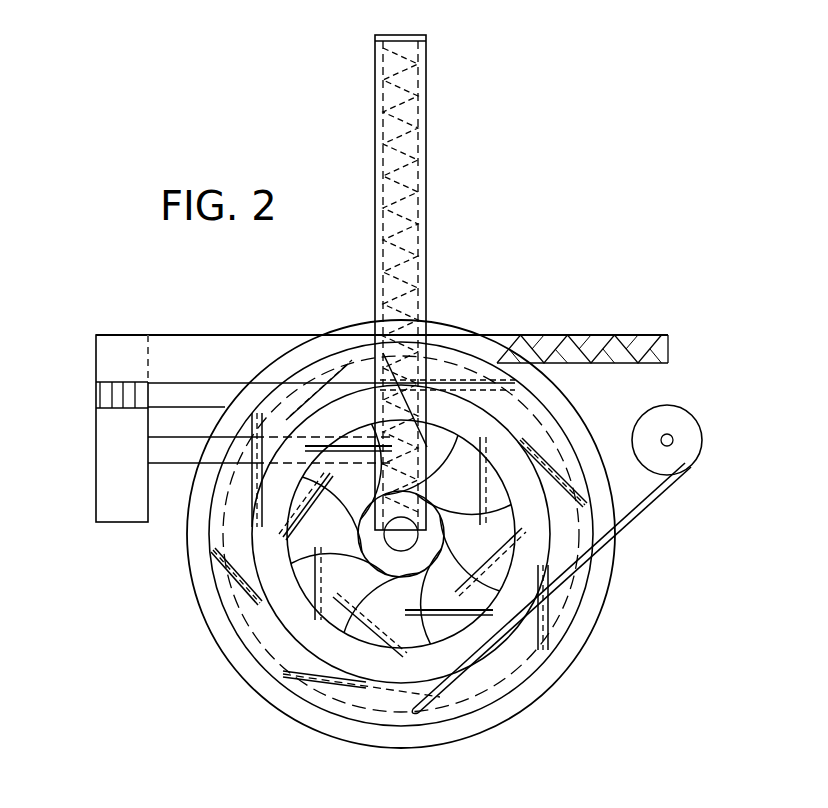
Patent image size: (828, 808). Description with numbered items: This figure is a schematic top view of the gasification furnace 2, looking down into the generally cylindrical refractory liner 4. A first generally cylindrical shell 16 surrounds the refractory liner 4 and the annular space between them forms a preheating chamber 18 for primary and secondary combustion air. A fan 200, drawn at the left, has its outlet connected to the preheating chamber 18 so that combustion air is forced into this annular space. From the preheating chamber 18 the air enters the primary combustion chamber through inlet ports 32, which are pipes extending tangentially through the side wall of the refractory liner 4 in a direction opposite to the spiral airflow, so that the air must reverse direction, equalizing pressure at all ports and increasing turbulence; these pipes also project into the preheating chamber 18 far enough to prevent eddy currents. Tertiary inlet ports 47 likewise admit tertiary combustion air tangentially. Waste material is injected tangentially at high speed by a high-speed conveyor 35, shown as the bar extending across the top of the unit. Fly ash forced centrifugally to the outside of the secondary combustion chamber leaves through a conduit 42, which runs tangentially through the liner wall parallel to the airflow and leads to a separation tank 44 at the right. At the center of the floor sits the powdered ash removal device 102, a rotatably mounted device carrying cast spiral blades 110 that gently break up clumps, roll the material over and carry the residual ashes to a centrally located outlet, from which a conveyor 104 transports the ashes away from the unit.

The furnace 2 is at (498, 302).
The refractory liner 4 is at (296, 648).
The first generally cylindrical shell 16 is at (470, 737).
The preheating chamber 18 is at (560, 627).
The inlet ports 32 is at (555, 447).
The high-speed conveyor 35 is at (586, 335).
The conduit 42 is at (616, 520).
The separation tank 44 is at (702, 441).
The tertiary inlet ports 47 is at (273, 537).
The powdered ash removal device 102 is at (463, 580).
The conveyor 104 is at (426, 52).
The spiral blades 110 is at (347, 490).
The fan 200 is at (96, 430).